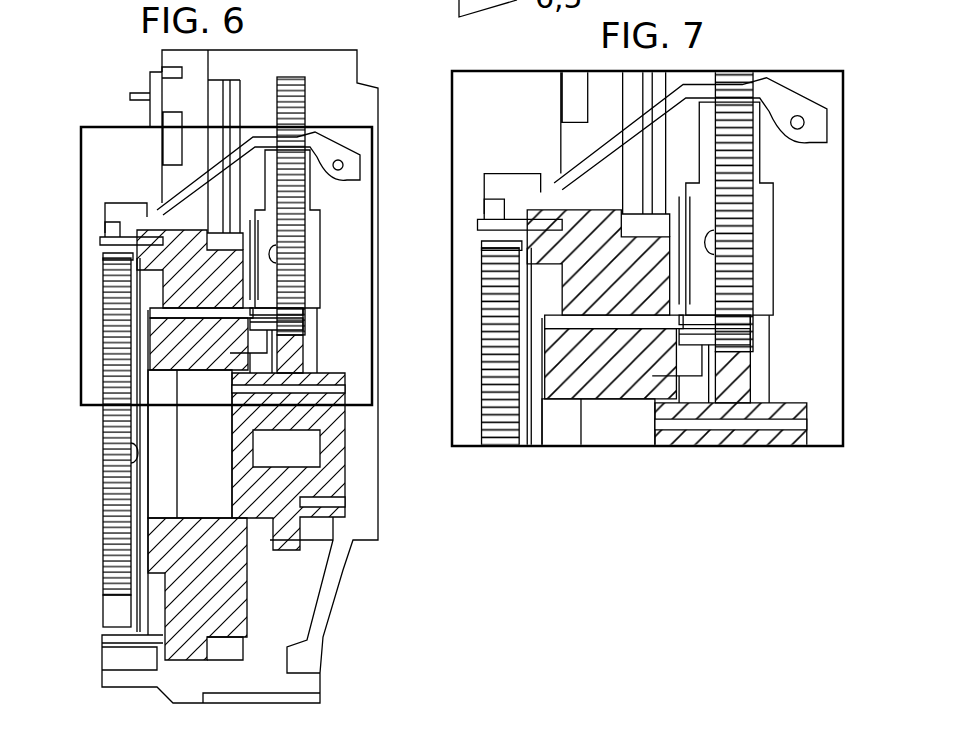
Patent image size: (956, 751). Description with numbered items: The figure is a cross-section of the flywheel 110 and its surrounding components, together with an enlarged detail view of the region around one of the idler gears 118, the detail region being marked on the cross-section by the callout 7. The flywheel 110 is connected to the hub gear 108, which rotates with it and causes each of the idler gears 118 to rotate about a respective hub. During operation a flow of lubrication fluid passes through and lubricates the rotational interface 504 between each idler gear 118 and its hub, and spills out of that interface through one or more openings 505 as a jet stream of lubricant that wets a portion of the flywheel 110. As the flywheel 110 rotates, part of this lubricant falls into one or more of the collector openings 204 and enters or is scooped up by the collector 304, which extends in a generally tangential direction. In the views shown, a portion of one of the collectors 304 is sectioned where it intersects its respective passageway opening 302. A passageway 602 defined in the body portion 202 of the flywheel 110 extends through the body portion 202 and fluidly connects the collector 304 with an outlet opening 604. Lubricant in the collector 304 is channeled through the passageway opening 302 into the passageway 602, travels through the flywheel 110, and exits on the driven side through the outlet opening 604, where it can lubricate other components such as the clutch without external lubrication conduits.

In FIG. 6, the hub gear 108 is at (350, 507).
In FIG. 6, the flywheel 110 is at (155, 207).
In FIG. 7, the flywheel 110 is at (557, 212).
In FIG. 6, the idler gears 118 is at (297, 192).
In FIG. 7, the idler gears 118 is at (762, 290).
In FIG. 6, the body portion 202 is at (173, 345).
In FIG. 7, the body portion 202 is at (630, 373).
In FIG. 7, the collector openings 204 is at (402, 3).
In FIG. 6, the passageway openings 302 is at (325, 318).
In FIG. 7, the passageway openings 302 is at (682, 318).
In FIG. 6, the collectors 304 is at (258, 327).
In FIG. 7, the collectors 304 is at (693, 335).
In FIG. 6, the rotational interface 504 is at (330, 230).
In FIG. 7, the rotational interface 504 is at (750, 218).
In FIG. 6, the openings 505 is at (275, 258).
In FIG. 7, the openings 505 is at (703, 252).
In FIG. 6, the passageway 602 is at (173, 315).
In FIG. 7, the passageway 602 is at (603, 325).
In FIG. 6, the outlet opening 604 is at (117, 442).
In FIG. 7, the outlet opening 604 is at (537, 330).
In FIG. 6, the detail region of FIG. 7 is at (372, 377).